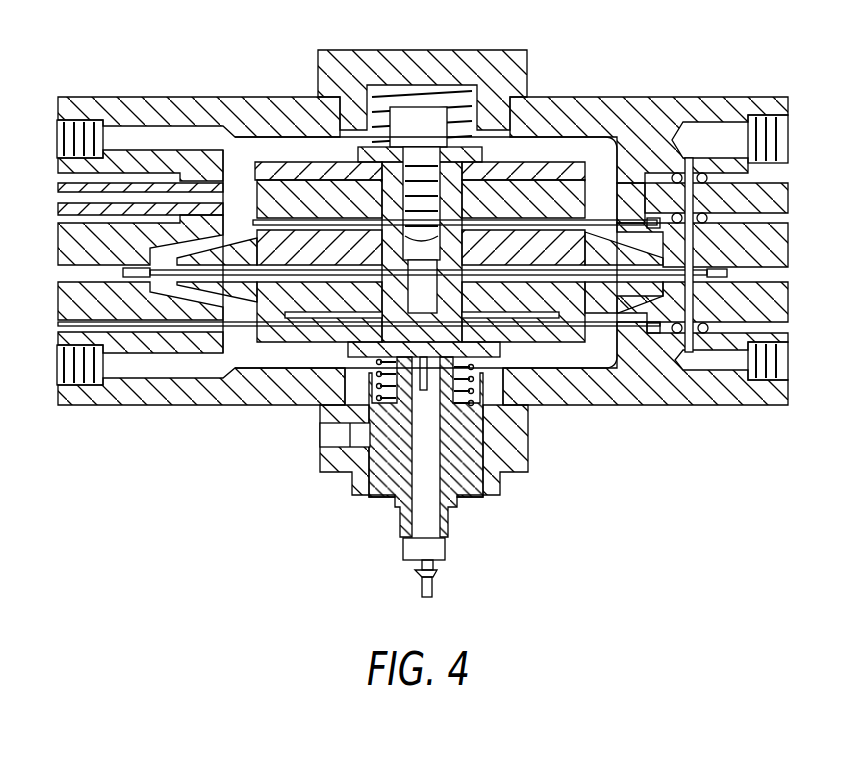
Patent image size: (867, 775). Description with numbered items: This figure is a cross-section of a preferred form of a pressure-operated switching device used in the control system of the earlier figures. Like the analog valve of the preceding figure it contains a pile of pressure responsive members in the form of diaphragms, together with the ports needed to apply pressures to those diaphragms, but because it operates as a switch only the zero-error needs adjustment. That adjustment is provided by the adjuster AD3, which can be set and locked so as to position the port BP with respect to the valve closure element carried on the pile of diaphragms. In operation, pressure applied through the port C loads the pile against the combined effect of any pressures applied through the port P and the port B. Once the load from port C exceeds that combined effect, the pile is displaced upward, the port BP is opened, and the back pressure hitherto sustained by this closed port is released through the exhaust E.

The port P is at (57, 135).
The exhaust E is at (57, 365).
The port B is at (788, 137).
The port C is at (788, 360).
The adjuster AD3 is at (530, 450).
The port BP is at (424, 580).